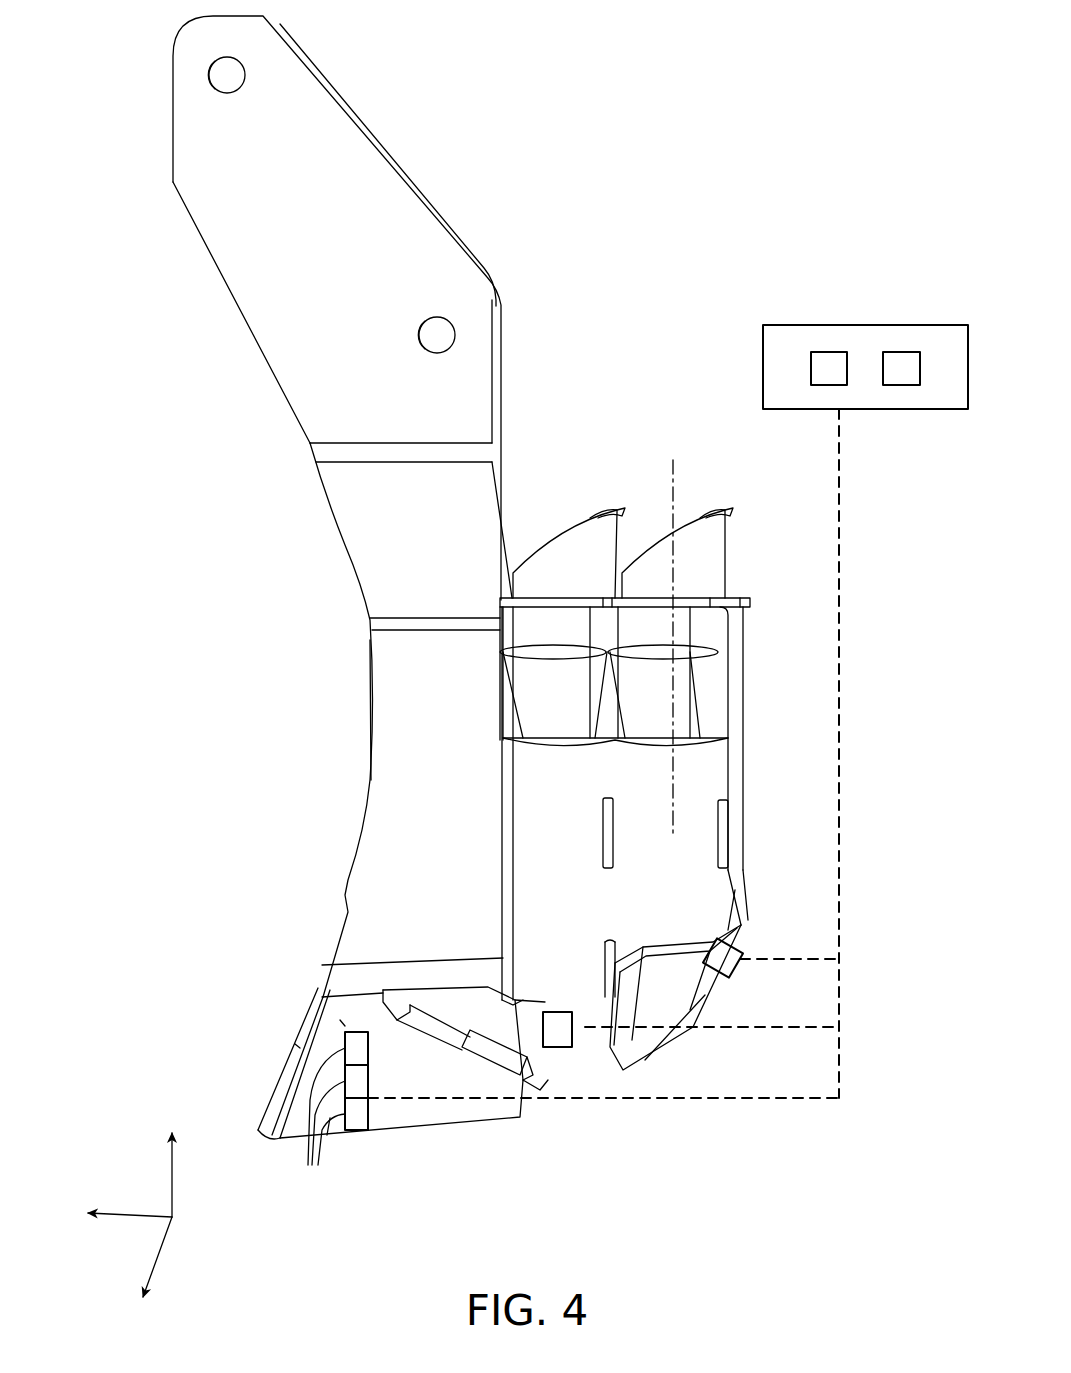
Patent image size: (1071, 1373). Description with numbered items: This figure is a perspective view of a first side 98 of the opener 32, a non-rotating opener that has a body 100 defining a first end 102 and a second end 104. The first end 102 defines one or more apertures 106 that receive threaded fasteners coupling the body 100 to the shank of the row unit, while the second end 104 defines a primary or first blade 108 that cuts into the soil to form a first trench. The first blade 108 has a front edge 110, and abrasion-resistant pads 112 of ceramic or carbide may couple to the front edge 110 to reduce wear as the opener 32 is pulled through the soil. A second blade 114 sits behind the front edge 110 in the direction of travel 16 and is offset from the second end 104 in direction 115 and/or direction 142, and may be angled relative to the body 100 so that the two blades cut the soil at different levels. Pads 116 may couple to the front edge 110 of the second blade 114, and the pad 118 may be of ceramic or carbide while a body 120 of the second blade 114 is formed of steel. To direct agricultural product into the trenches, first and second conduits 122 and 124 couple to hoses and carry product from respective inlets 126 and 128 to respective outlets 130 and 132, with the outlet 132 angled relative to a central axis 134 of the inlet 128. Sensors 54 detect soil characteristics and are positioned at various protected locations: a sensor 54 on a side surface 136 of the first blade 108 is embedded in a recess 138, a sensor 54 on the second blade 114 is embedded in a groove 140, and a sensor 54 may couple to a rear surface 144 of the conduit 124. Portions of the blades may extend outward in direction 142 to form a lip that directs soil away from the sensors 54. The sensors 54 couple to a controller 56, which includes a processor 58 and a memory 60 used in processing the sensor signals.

The direction of travel 16 is at (140, 1217).
The opener 32 is at (175, 340).
The sensors 54 is at (543, 1025).
The controller 56 is at (865, 409).
The processor 58 is at (826, 352).
The memory 60 is at (898, 352).
The first side 98 is at (230, 660).
The body 100 is at (372, 855).
The first end 102 is at (397, 73).
The second end 104 is at (400, 1157).
The apertures 106 is at (210, 77).
The first blade 108 is at (215, 1032).
The front edge 110 is at (287, 1075).
The pads 112 is at (268, 1110).
The second blade 114 is at (610, 1105).
The direction 115 is at (172, 1180).
The pads 116 is at (498, 1062).
The pad 118 is at (443, 1030).
The body of the second blade 120 is at (585, 1045).
The first conduit 122 is at (530, 700).
The second conduit 124 is at (690, 705).
The inlet 126 is at (580, 543).
The inlet 128 is at (655, 558).
The outlet 130 is at (545, 1123).
The outlet 132 is at (640, 1047).
The central axis 134 is at (673, 760).
The side surface 136 is at (342, 1022).
The recess 138 is at (333, 1130).
The groove 140 is at (557, 1008).
The direction 142 is at (160, 1250).
The rear surface 144 is at (727, 923).